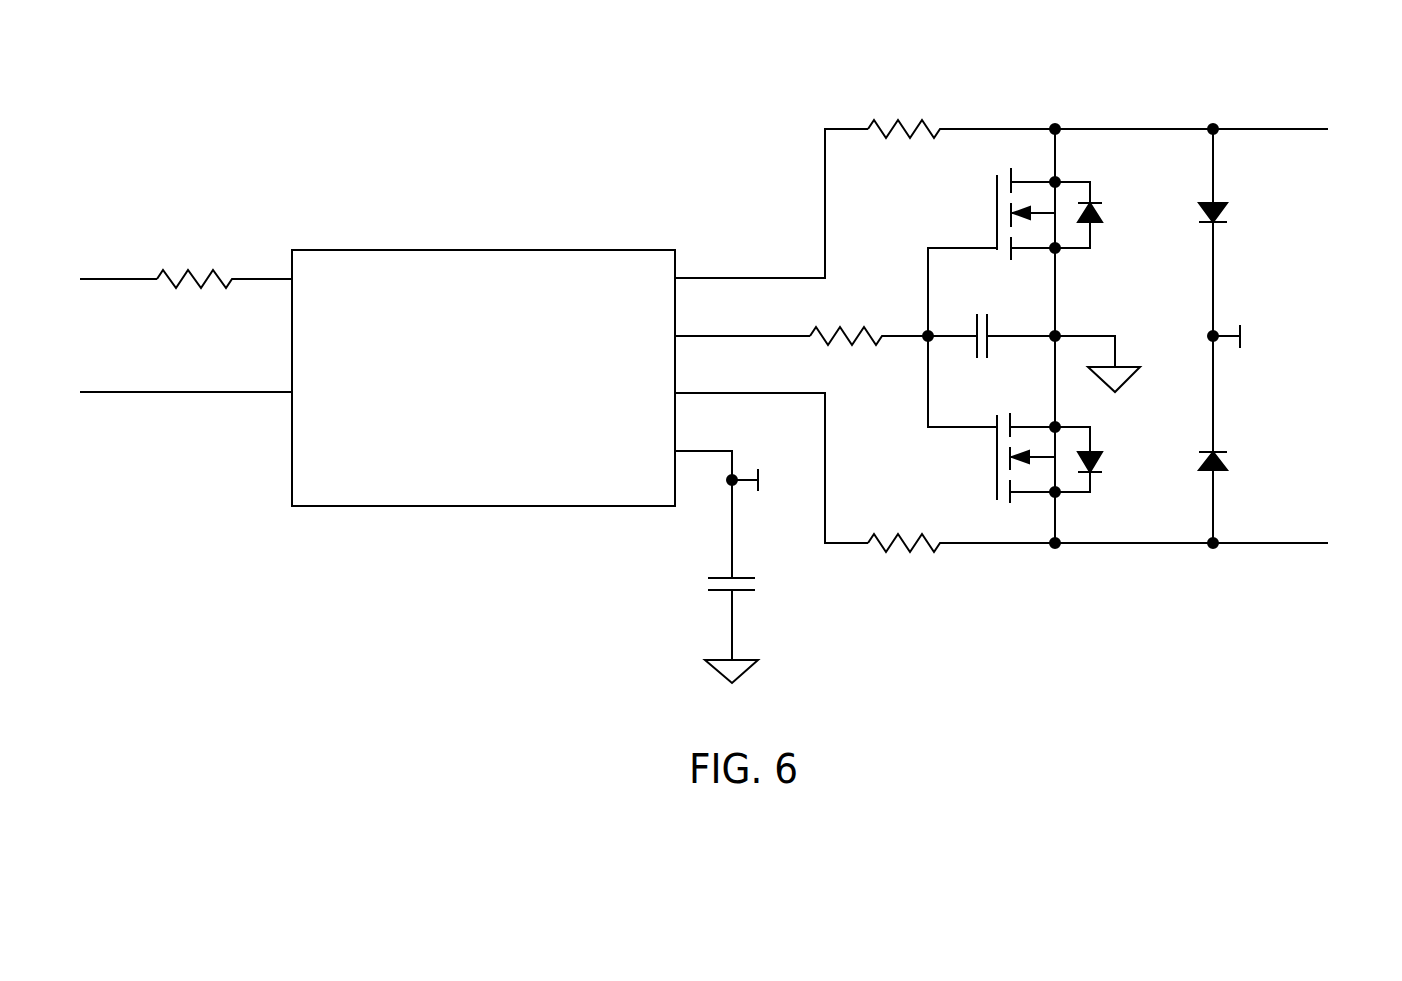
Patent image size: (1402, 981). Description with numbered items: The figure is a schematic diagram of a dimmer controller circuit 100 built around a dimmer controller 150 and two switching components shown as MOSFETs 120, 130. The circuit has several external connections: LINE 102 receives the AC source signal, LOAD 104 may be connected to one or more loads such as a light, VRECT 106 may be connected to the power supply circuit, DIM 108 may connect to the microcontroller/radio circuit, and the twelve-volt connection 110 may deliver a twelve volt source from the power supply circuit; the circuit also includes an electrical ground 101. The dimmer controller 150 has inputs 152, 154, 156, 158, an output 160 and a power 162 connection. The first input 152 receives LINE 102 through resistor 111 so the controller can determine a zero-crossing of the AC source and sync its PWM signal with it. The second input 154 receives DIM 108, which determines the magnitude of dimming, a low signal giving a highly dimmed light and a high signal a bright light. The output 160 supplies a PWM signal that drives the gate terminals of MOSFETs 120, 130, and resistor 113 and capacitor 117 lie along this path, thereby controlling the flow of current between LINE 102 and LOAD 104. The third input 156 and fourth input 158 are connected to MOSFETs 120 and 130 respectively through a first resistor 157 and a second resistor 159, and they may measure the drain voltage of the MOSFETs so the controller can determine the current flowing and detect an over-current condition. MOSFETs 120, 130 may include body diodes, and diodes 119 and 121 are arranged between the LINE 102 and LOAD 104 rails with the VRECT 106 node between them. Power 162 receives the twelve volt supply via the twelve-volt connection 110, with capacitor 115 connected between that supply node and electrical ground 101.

The dimmer controller circuit 100 is at (287, 75).
The electrical ground 101 is at (718, 660).
The LINE 102 is at (77, 268).
The LOAD 104 is at (1335, 530).
The VRECT 106 is at (1335, 333).
The DIM 108 is at (77, 381).
The 12-volt connection 110 is at (777, 497).
The resistor 111 is at (196, 271).
The resistor 113 is at (851, 333).
The capacitor 115 is at (743, 593).
The capacitor 117 is at (974, 331).
The diode 119 is at (1229, 218).
The MOSFET 120 is at (1094, 198).
The diode 121 is at (1227, 455).
The MOSFET 130 is at (1096, 437).
The dimmer controller 150 is at (545, 249).
The first input 152 is at (283, 267).
The second input 154 is at (283, 404).
The third input 156 is at (683, 271).
The first resistor 157 is at (887, 127).
The fourth input 158 is at (685, 403).
The second resistor 159 is at (897, 551).
The output 160 is at (685, 346).
The power 162 is at (685, 465).